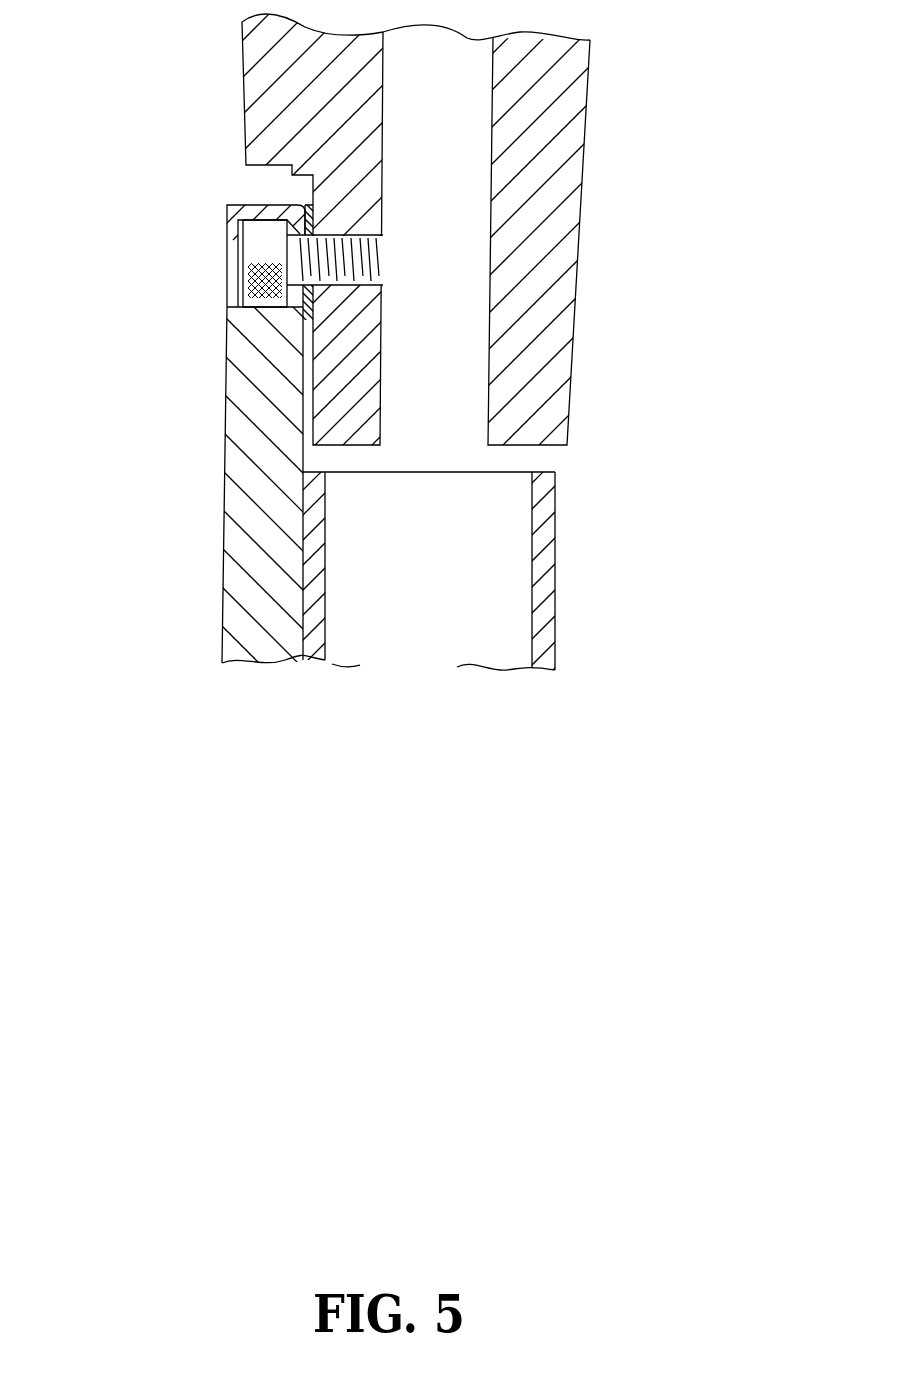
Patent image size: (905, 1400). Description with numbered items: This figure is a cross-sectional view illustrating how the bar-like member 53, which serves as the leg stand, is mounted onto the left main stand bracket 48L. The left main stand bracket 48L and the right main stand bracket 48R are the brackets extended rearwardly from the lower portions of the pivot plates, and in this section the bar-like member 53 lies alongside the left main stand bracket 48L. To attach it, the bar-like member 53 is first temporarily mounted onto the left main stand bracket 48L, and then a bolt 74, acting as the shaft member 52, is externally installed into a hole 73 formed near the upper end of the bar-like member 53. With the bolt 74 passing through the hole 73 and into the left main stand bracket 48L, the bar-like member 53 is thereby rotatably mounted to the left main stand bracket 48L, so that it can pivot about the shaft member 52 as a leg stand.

The left main stand bracket 48L is at (270, 86).
The right main stand bracket 48R is at (571, 104).
The hole 73 is at (286, 251).
The shaft member 52 is at (257, 261).
The bolt 74 is at (257, 261).
The bar-like member 53 is at (250, 446).